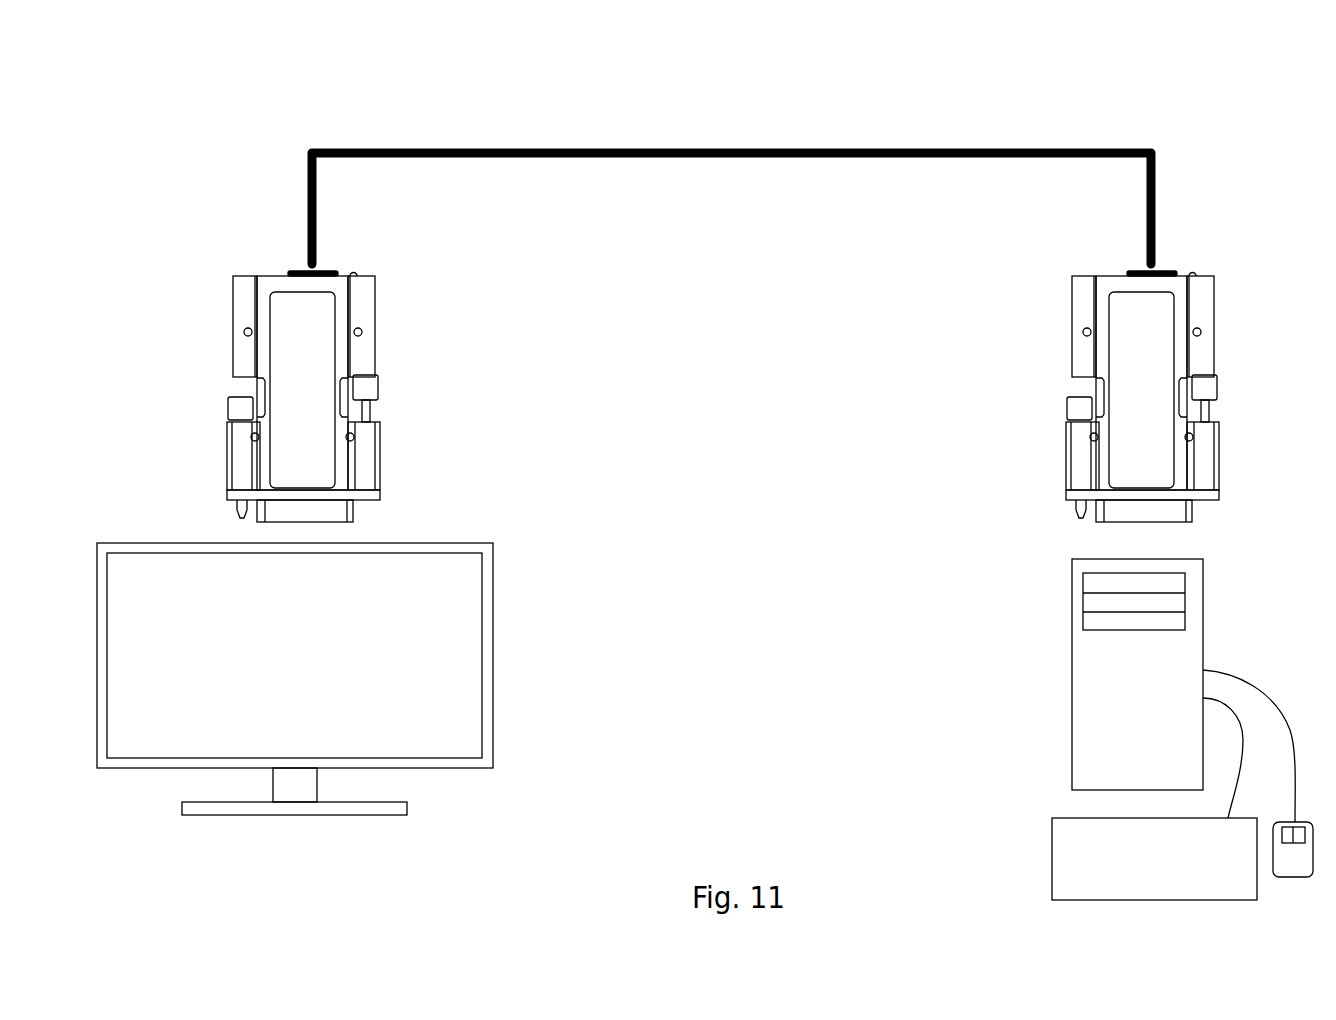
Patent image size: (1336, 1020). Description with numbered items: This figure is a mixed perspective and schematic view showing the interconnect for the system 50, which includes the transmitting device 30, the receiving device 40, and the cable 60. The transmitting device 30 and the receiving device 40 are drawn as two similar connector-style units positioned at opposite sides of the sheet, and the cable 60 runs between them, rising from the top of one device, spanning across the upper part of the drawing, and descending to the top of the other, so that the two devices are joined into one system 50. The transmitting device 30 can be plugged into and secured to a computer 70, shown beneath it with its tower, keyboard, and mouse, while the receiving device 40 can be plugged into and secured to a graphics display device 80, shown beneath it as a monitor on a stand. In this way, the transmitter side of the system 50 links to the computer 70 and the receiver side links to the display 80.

The transmitting device 30 is at (1072, 344).
The receiving device 40 is at (233, 331).
The system 50 is at (727, 307).
The cable 60 is at (885, 151).
The computer 70 is at (1073, 645).
The graphics display device 80 is at (493, 600).